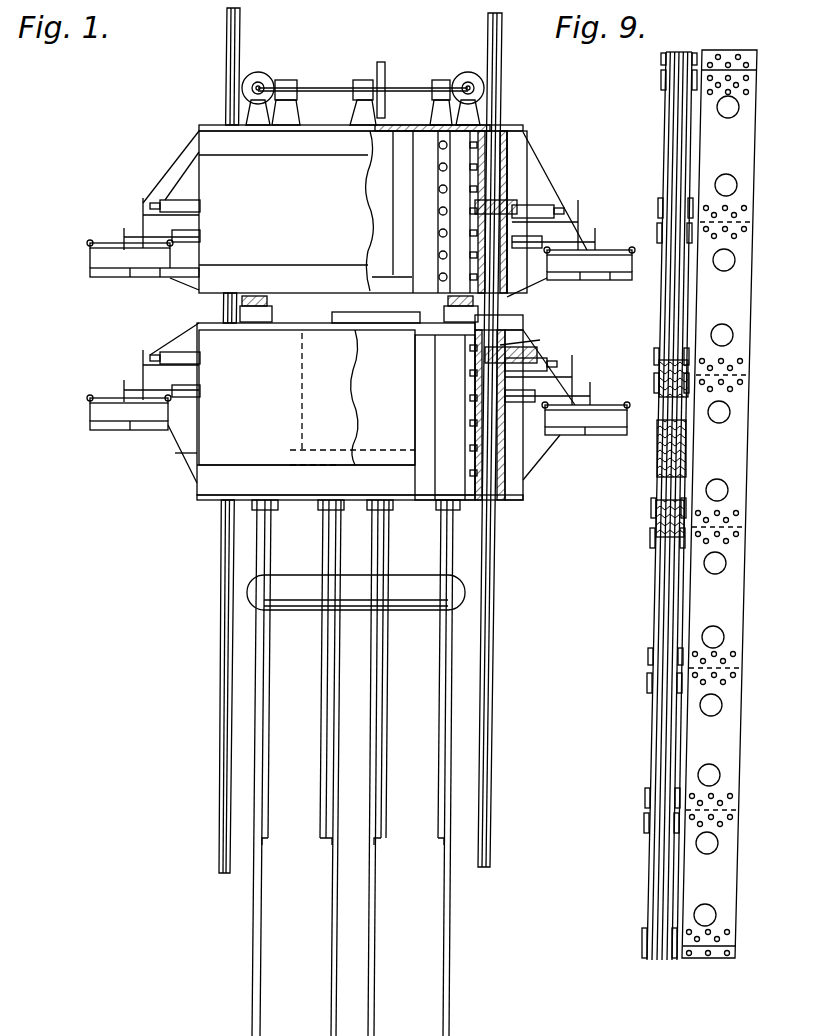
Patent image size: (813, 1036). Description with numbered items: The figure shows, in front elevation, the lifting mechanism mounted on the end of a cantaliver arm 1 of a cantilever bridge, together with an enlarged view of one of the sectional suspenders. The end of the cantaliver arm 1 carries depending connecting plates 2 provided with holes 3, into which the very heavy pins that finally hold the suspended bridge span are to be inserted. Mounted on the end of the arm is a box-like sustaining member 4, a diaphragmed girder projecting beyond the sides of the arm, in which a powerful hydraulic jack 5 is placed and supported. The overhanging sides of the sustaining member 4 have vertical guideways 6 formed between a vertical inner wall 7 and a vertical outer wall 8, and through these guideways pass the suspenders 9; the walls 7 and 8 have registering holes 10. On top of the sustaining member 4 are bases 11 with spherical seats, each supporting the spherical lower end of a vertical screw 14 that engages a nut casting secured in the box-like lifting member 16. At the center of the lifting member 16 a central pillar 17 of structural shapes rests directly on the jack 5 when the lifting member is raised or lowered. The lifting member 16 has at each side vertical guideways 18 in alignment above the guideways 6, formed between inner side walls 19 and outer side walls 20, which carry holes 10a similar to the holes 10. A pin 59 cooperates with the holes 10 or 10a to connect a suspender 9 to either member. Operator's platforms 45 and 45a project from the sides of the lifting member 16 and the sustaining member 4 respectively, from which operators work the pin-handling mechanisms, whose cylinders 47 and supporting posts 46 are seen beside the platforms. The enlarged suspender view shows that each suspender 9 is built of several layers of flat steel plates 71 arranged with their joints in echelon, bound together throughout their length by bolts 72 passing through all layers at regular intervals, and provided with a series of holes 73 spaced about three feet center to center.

In FIG. 1, the cantaliver arm 1 is at (331, 1001).
In FIG. 1, the connecting plates 2 is at (320, 822).
In FIG. 1, the holes 3 is at (322, 773).
In FIG. 1, the sustaining member 4 is at (336, 409).
In FIG. 1, the hydraulic jack 5 is at (307, 397).
In FIG. 1, the vertical guideways 6 is at (494, 502).
In FIG. 1, the vertical inner wall 7 is at (475, 445).
In FIG. 1, the vertical outer wall 8 is at (506, 472).
In FIG. 1, the suspenders 9 is at (228, 62).
In FIG. 1, the holes 10 is at (480, 356).
In FIG. 1, the holes 10a is at (433, 193).
In FIG. 1, the bases 11 is at (262, 322).
In FIG. 1, the vertical screw 14 is at (268, 302).
In FIG. 1, the lifting member 16 is at (353, 212).
In FIG. 1, the central pillar 17 is at (373, 192).
In FIG. 1, the vertical guideways 18 is at (498, 132).
In FIG. 1, the inner side walls 19 is at (438, 150).
In FIG. 1, the outer side walls 20 is at (508, 148).
In FIG. 1, the operator's platform 45 is at (90, 272).
In FIG. 1, the operator's platform 45a is at (90, 426).
In FIG. 1, the platform post 46 is at (122, 232).
In FIG. 1, the cylinder 47 is at (138, 233).
In FIG. 1, the pin 59 is at (536, 354).
In FIG. 9, the flat steel plates 71 is at (684, 166).
In FIG. 9, the bolts 72 is at (656, 508).
In FIG. 1, the holes 73 is at (186, 745).
In FIG. 9, the holes 73 is at (724, 272).